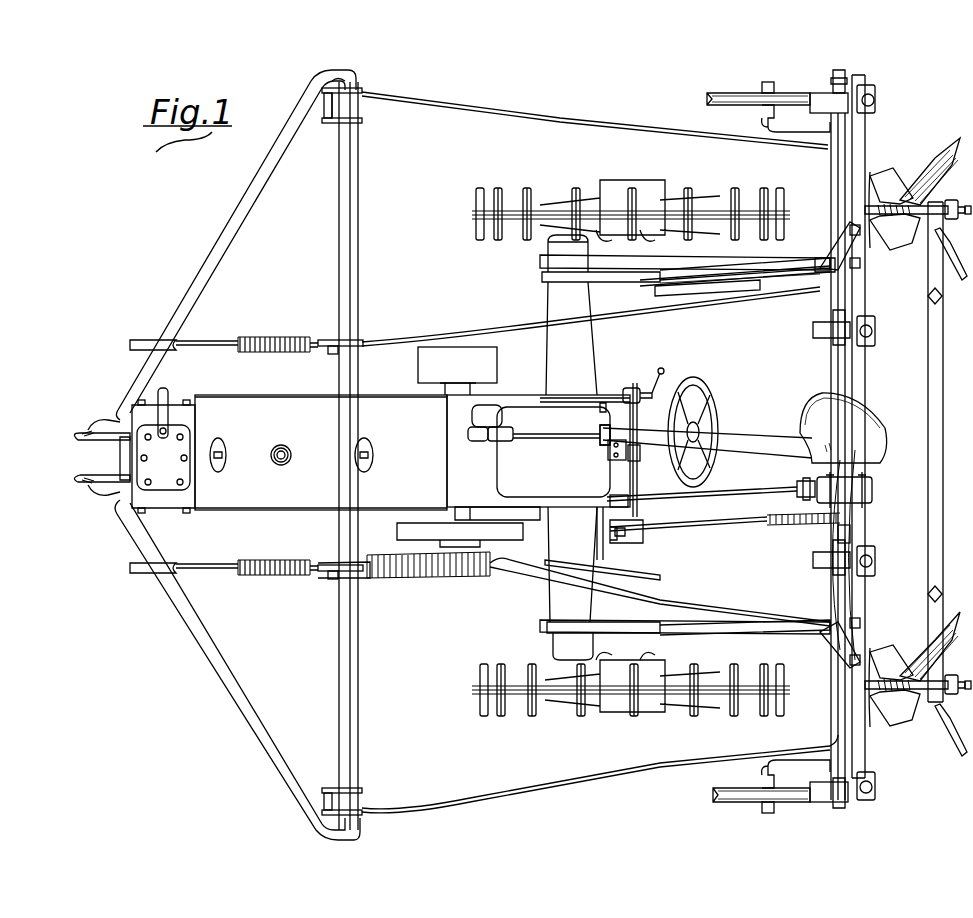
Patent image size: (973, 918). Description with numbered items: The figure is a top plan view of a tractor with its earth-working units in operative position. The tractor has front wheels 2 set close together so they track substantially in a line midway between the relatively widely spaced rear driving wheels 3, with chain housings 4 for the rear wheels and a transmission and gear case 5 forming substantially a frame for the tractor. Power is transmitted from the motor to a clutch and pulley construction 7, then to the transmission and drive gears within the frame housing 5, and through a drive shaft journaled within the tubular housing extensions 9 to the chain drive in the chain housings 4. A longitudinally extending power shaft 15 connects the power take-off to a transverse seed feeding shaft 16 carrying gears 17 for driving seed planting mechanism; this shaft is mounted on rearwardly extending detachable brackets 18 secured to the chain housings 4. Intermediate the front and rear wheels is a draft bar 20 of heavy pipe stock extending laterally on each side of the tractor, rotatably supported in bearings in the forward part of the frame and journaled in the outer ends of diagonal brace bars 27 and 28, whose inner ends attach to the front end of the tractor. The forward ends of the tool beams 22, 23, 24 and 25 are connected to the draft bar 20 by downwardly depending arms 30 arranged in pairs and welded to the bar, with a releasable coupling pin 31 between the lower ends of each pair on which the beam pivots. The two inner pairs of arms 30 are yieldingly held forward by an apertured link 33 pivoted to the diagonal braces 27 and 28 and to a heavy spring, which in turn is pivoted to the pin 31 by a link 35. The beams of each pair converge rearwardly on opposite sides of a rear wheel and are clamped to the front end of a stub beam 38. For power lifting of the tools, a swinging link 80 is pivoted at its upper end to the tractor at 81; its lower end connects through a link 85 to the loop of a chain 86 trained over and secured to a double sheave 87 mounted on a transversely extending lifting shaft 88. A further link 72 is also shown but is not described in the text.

The front wheels 2 is at (88, 468).
The rear driving wheels 3 is at (586, 190).
The chain housings 4 is at (560, 258).
The transmission and gear case 5 is at (513, 471).
The clutch and pulley construction 7 is at (487, 362).
The tubular housing extensions 9 is at (577, 356).
The power shaft 15 is at (744, 496).
The seed feeding shaft 16 is at (850, 375).
The gears 17 is at (855, 95).
The detachable brackets 18 is at (760, 262).
The draft bar 20 is at (345, 654).
The tool beam 22 is at (466, 808).
The tool beam 23 is at (525, 585).
The tool beam 24 is at (445, 330).
The tool beam 25 is at (455, 108).
The diagonal brace bar 27 is at (200, 632).
The diagonal brace bar 28 is at (190, 292).
The arms 30 is at (348, 130).
The coupling pin 31 is at (324, 120).
The apertured link 33 is at (216, 345).
The link 35 is at (318, 352).
The stub beam 38 is at (916, 205).
The lift link 72 is at (672, 298).
The swinging link 80 is at (646, 458).
The pivot 81 is at (628, 540).
The link 85 is at (720, 524).
The chain 86 is at (796, 528).
The double sheave 87 is at (850, 510).
The lifting shaft 88 is at (838, 536).